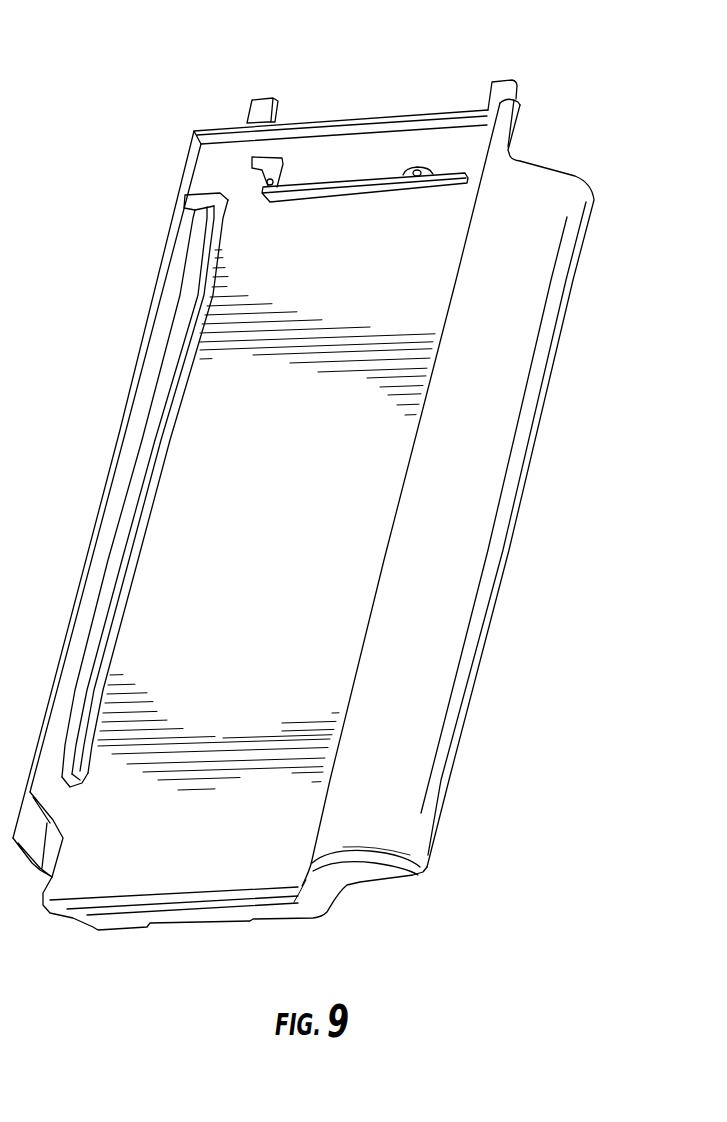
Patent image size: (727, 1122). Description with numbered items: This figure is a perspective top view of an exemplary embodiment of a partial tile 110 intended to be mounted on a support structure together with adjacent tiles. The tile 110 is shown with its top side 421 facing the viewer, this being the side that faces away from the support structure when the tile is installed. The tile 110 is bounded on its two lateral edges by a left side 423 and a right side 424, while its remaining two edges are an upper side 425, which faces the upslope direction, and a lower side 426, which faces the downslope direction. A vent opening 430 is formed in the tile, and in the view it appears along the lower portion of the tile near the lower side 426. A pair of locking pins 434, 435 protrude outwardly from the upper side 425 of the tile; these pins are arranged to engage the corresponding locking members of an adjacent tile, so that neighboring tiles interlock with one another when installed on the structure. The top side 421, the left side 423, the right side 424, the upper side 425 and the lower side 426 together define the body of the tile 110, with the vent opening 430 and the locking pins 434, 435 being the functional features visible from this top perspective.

The tile 110 is at (114, 123).
The top side 421 is at (353, 493).
The left side 423 is at (112, 467).
The right side 424 is at (573, 300).
The upper side 425 is at (366, 116).
The lower side 426 is at (120, 923).
The vent opening 430 is at (180, 923).
The locking pin 434 is at (263, 97).
The locking pin 435 is at (522, 80).